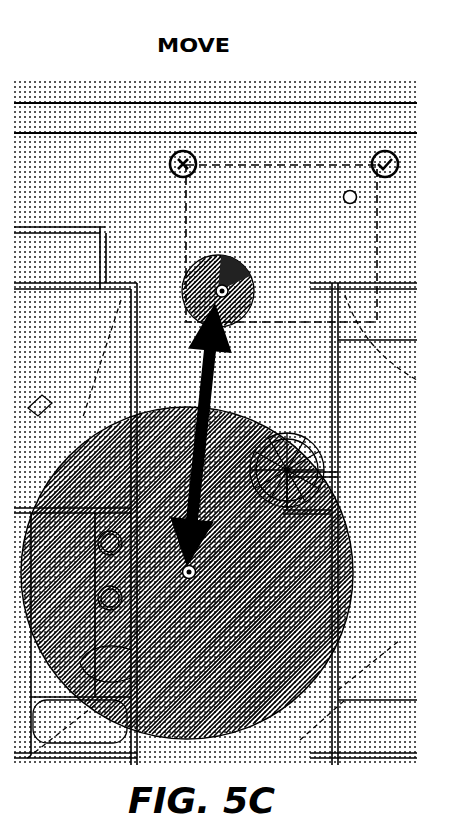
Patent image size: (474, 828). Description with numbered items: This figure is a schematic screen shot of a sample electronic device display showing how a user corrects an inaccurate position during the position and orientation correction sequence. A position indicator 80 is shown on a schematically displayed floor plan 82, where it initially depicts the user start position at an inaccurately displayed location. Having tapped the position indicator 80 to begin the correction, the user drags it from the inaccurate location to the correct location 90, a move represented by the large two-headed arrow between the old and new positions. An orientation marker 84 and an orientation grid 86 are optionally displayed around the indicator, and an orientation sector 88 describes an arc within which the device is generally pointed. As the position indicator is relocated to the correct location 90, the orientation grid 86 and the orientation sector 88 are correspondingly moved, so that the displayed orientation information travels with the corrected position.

The position indicator 80 is at (193, 580).
The floor plan 82 is at (44, 112).
The orientation marker 84 is at (350, 190).
The orientation grid 86 is at (317, 165).
The orientation sector 88 is at (245, 262).
The correct location 90 is at (272, 165).